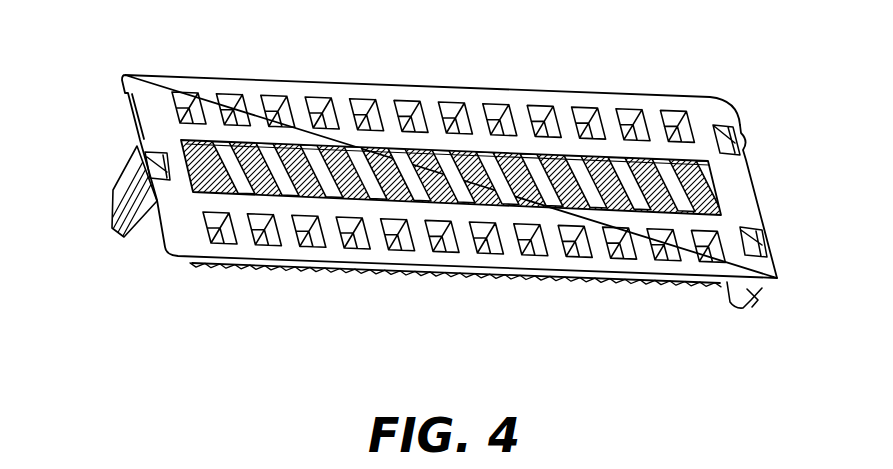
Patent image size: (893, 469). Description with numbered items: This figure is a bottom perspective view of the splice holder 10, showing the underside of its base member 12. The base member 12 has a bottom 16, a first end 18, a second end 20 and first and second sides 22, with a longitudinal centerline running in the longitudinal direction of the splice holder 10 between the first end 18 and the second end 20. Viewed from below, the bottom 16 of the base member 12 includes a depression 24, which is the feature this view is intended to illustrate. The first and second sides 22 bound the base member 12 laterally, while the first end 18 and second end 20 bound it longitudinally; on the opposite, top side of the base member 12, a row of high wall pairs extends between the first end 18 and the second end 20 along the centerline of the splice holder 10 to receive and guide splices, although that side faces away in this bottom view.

The splice holder 10 is at (447, 204).
The base member 12 is at (722, 110).
The bottom 16 is at (740, 276).
The first end 18 is at (752, 193).
The second end 20 is at (128, 118).
The first and second sides 22 is at (425, 88).
The depression 24 is at (643, 162).